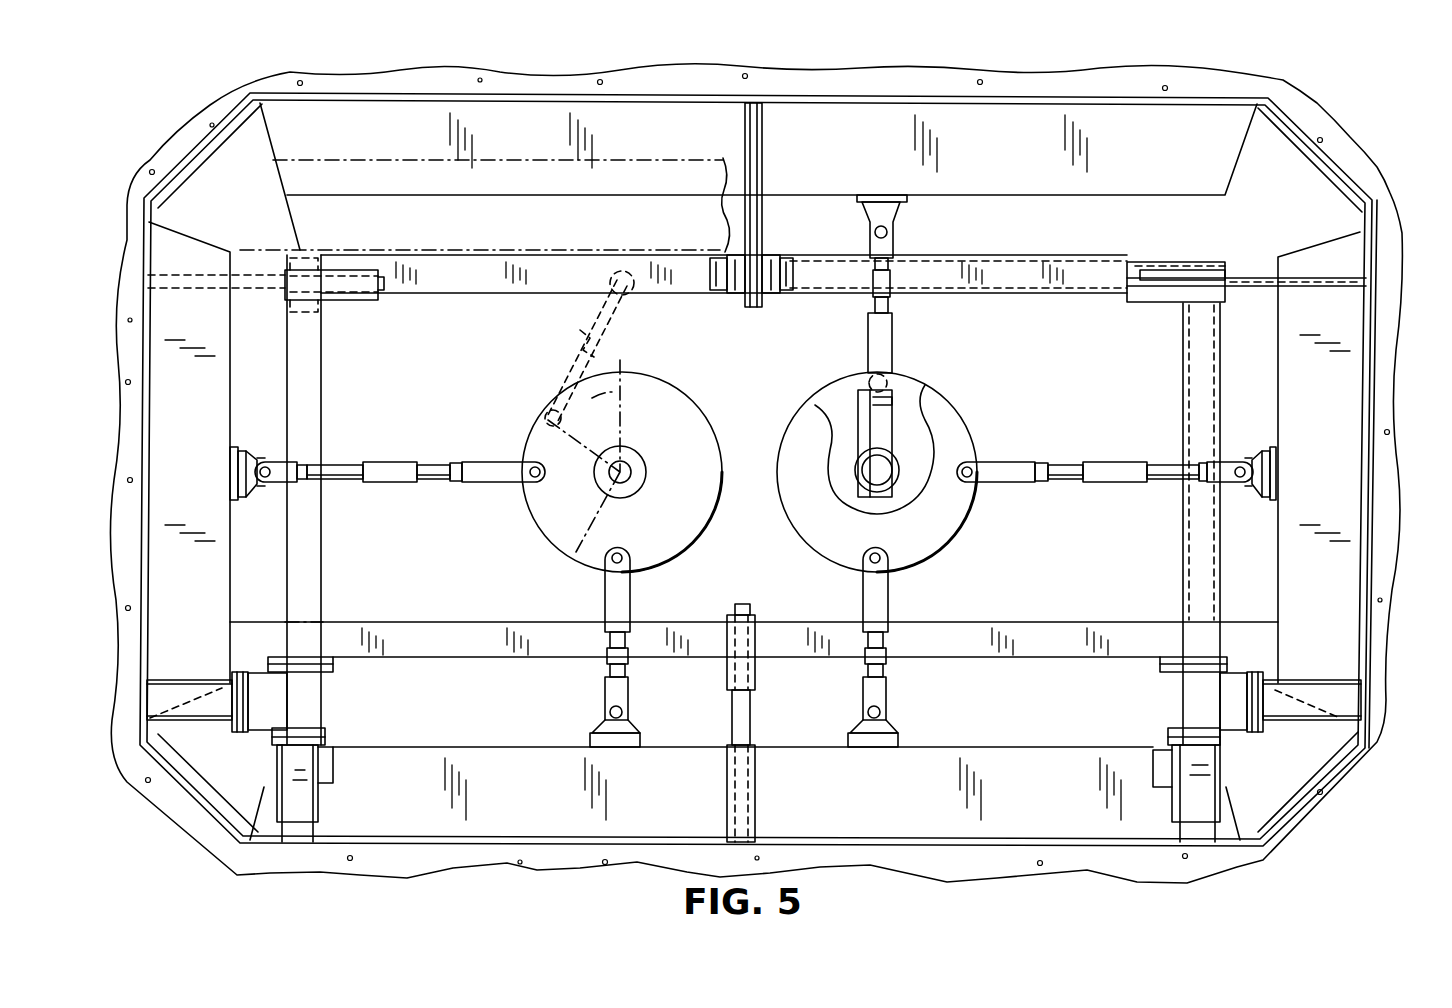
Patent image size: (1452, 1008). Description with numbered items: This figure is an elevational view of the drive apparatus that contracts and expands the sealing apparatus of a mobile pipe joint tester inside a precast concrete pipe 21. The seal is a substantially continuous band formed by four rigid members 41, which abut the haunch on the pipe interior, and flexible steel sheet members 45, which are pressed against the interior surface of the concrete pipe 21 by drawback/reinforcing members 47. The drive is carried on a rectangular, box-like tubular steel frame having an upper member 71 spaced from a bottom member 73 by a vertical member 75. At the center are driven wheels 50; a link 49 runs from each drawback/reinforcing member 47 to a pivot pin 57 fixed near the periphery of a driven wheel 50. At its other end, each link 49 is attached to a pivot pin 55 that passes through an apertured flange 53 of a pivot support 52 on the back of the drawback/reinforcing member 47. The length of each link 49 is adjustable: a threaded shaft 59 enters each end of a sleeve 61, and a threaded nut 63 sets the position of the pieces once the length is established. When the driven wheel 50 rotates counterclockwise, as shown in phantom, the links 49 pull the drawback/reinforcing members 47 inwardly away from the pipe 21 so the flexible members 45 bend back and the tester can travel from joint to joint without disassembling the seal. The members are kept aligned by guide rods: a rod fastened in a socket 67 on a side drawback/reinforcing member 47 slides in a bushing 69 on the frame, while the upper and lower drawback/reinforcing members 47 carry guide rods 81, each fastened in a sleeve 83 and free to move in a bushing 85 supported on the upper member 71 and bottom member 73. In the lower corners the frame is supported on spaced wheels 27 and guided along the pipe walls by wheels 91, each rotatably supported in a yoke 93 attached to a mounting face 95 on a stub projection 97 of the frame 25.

The concrete pipe 21 is at (432, 76).
The flexible steel sheet member 45 is at (1378, 458).
The rigid member 41 is at (195, 165).
The drawback/reinforcing member 47 is at (187, 396).
The bottom member 73 is at (493, 620).
The vertical member 75 is at (323, 406).
The upper member 71 is at (520, 294).
The bushing 69 is at (364, 300).
The socket 67 is at (1323, 280).
The sleeve 83 is at (763, 162).
The guide rod 81 is at (760, 242).
The bushing 85 is at (742, 300).
The driven wheel 50 is at (792, 476).
The link 49 is at (556, 369).
The pivot support 52 is at (232, 458).
The pivot pin 55 is at (269, 462).
The apertured flange 53 is at (257, 490).
The threaded nut 63 is at (301, 460).
The threaded shaft 59 is at (345, 480).
The sleeve 61 is at (383, 482).
The pivot pin 57 is at (530, 490).
The wheel 91 is at (152, 688).
The yoke 93 is at (197, 680).
The mounting face 95 is at (245, 665).
The stub projection 97 is at (264, 720).
The frame 25 is at (310, 708).
The wheel 27 is at (310, 808).